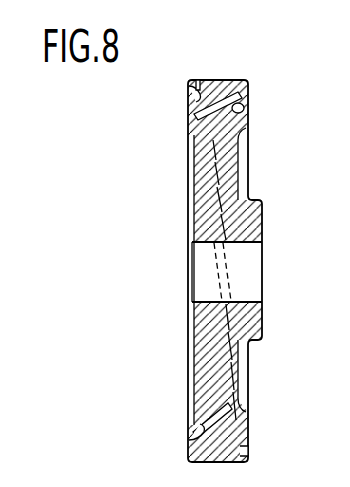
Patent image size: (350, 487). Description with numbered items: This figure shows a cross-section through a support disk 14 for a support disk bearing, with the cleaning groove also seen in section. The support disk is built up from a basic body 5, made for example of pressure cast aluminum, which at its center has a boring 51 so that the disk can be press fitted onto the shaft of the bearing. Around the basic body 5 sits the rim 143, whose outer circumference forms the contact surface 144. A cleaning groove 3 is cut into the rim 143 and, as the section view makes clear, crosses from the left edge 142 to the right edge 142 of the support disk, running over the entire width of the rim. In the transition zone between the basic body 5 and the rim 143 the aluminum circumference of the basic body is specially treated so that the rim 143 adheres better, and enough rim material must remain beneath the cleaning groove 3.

The support disk 14 is at (200, 242).
The basic body 5 is at (210, 332).
The boring 51 is at (238, 243).
The cleaning groove 3 is at (197, 80).
The edge 142 is at (188, 112).
The rim 143 is at (250, 87).
The contact surface 144 is at (234, 80).